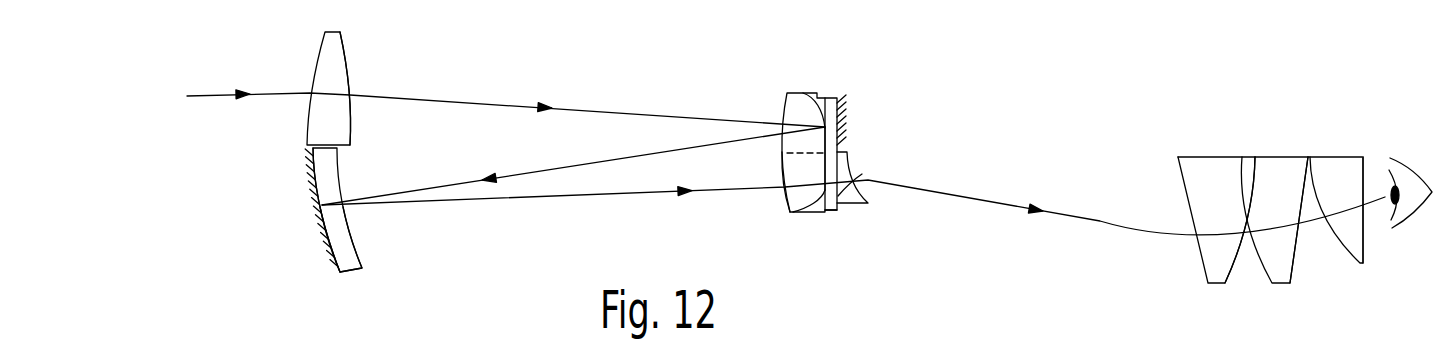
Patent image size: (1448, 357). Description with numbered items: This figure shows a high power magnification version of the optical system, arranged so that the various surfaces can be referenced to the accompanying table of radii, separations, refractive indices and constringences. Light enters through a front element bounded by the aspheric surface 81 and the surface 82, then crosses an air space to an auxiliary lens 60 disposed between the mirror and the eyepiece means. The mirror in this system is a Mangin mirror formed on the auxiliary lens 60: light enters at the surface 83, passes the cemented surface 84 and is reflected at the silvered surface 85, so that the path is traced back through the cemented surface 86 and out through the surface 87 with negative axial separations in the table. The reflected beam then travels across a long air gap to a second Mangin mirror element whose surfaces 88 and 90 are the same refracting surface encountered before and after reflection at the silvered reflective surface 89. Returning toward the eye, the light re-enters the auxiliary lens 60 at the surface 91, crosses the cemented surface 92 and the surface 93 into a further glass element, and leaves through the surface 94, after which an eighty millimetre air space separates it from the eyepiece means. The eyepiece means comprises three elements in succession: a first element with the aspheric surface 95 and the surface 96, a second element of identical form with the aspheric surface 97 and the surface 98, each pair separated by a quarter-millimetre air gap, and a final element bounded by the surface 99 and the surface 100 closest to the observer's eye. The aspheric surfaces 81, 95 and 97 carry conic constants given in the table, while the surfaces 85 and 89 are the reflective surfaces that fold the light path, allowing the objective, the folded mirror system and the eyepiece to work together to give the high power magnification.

The auxiliary lens 60 is at (826, 216).
The surface 81 is at (317, 75).
The surface 82 is at (348, 78).
The surface 83 is at (785, 105).
The surface 84 is at (805, 93).
The surface 85 is at (843, 110).
The surface 86 is at (820, 133).
The surface 87 is at (785, 153).
The surface 88 is at (340, 177).
The surface 89 is at (317, 190).
The surface 90 is at (354, 243).
The surface 91 is at (782, 193).
The surface 92 is at (797, 212).
The surface 93 is at (862, 174).
The surface 94 is at (868, 193).
The surface 95 is at (1178, 180).
The surface 96 is at (1238, 187).
The surface 97 is at (1253, 180).
The surface 98 is at (1307, 190).
The surface 99 is at (1320, 195).
The surface 100 is at (1362, 183).